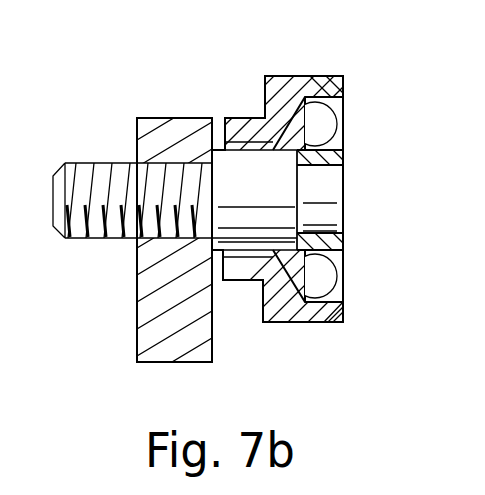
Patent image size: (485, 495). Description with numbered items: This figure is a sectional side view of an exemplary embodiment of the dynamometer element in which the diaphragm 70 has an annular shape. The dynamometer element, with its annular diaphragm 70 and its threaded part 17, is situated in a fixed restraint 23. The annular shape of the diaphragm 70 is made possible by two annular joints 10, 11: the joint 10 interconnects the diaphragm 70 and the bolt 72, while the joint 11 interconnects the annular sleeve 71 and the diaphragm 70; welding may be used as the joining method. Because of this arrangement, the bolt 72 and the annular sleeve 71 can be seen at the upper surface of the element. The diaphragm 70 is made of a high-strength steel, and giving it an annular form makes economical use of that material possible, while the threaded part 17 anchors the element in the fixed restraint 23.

The threaded part 17 is at (100, 240).
The fixed restraint 23 is at (178, 343).
The annular sleeve 71 is at (283, 76).
The diaphragm 70 is at (343, 100).
The joint 10 is at (343, 158).
The joint 11 is at (343, 77).
The bolt 72 is at (325, 217).